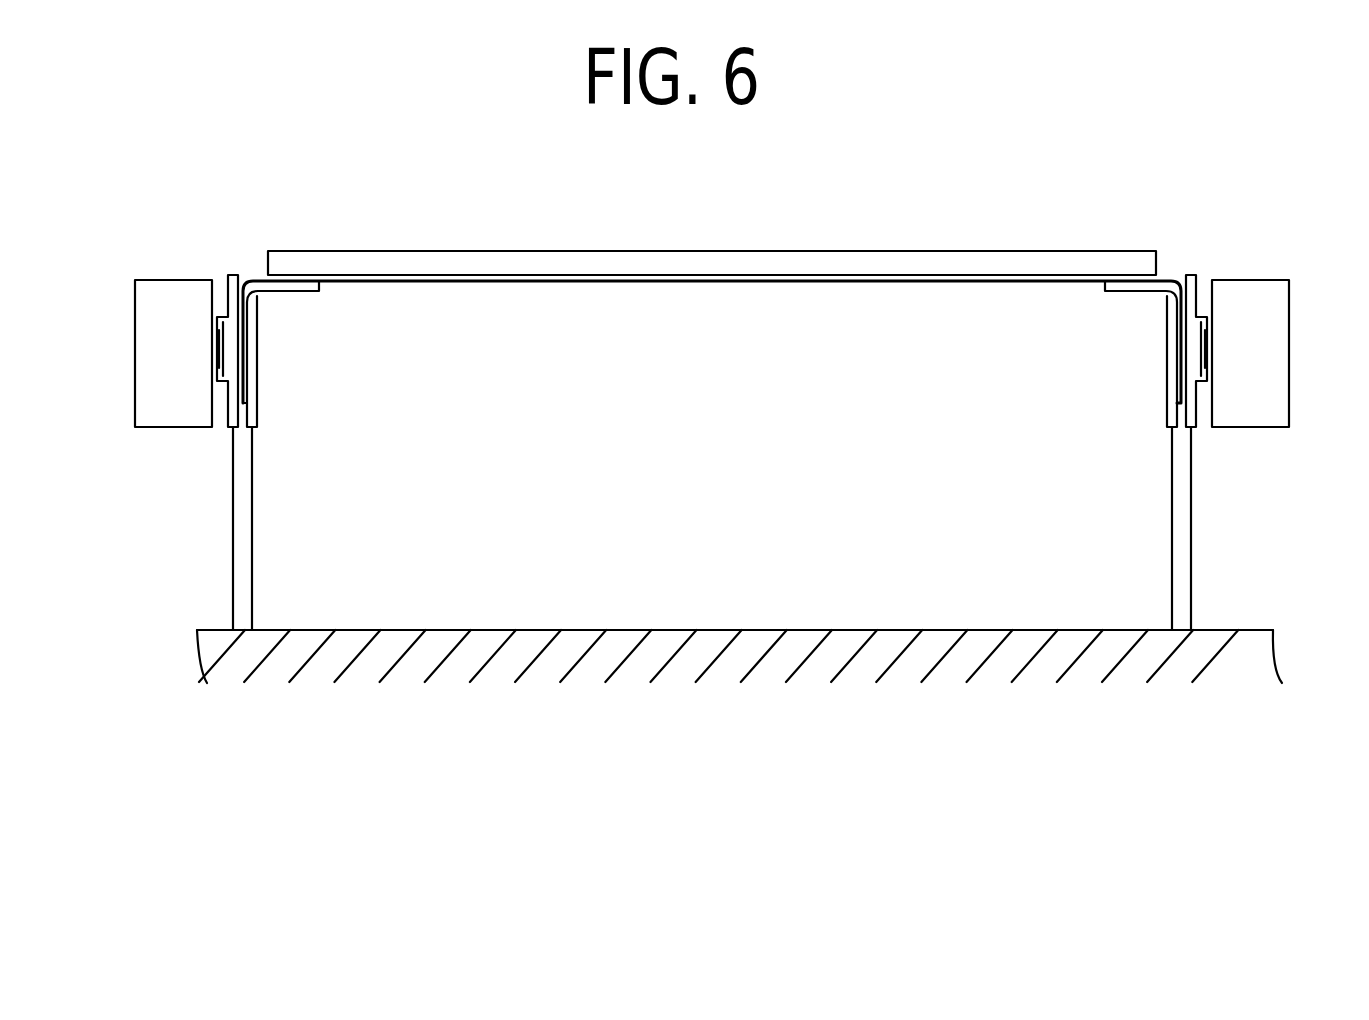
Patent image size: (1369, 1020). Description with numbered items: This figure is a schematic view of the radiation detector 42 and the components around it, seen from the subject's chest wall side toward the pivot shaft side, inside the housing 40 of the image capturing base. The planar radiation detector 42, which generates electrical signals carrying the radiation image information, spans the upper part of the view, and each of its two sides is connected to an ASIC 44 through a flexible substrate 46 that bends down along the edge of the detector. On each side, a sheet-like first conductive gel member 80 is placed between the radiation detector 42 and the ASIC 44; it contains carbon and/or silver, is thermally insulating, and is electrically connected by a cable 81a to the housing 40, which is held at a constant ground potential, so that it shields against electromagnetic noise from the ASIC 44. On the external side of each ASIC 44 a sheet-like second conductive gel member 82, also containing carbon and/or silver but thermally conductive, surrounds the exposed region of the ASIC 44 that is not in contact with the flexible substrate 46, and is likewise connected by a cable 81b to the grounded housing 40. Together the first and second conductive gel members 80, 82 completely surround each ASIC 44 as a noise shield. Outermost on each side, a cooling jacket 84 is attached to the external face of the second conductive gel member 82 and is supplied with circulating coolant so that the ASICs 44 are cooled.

The housing 40 is at (665, 629).
The radiation detector 42 is at (951, 263).
The ASIC 44 is at (231, 350).
The flexible substrate 46 is at (252, 270).
The first conductive gel member 80 is at (258, 358).
The cable 81a is at (254, 517).
The cable 81b is at (232, 517).
The second conductive gel member 82 is at (212, 292).
The cooling jacket 84 is at (182, 396).